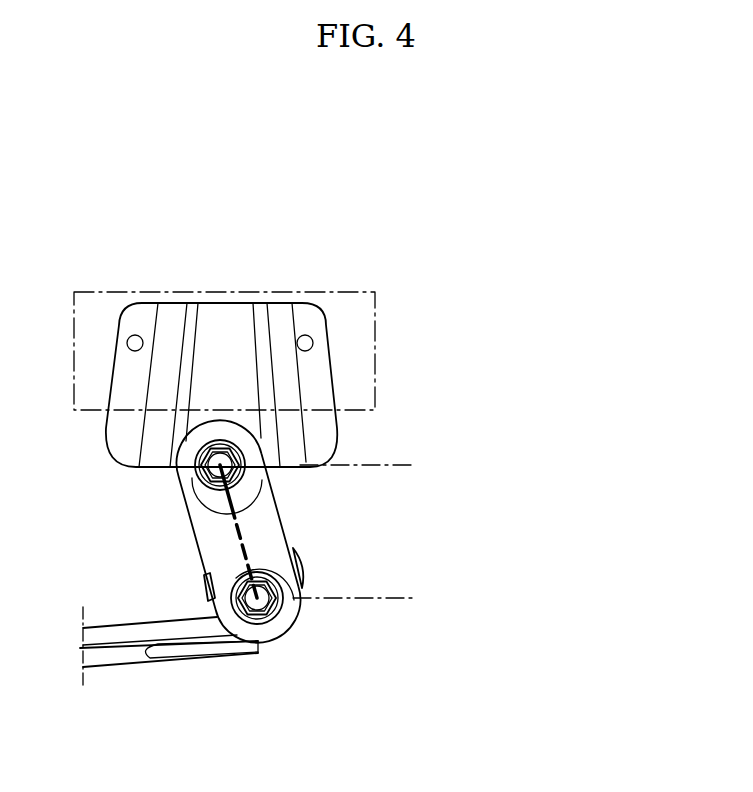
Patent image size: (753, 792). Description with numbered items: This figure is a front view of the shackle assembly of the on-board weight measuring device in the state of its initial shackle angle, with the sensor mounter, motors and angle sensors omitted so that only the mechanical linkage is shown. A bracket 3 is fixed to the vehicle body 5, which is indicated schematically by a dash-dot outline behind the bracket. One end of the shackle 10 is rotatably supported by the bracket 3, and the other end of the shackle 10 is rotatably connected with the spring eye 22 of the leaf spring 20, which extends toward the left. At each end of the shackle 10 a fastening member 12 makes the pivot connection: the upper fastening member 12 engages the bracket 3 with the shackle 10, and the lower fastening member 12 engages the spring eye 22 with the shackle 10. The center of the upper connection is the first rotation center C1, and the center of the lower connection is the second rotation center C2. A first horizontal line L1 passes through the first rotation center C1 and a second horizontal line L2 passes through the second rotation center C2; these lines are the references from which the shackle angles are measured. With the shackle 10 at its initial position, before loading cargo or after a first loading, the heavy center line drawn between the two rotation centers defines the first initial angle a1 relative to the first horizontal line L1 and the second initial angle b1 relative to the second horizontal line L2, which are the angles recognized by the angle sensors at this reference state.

The bracket 3 is at (222, 325).
The vehicle body 5 is at (352, 302).
The shackle 10 is at (268, 530).
The fastening member 12 is at (240, 588).
The leaf spring 20 is at (186, 648).
The spring eye 22 is at (205, 588).
The first rotation center C1 is at (197, 472).
The second rotation center C2 is at (262, 603).
The first initial angle a1 is at (246, 531).
The second initial angle b1 is at (267, 564).
The first horizontal line L1 is at (371, 465).
The second horizontal line L2 is at (368, 598).